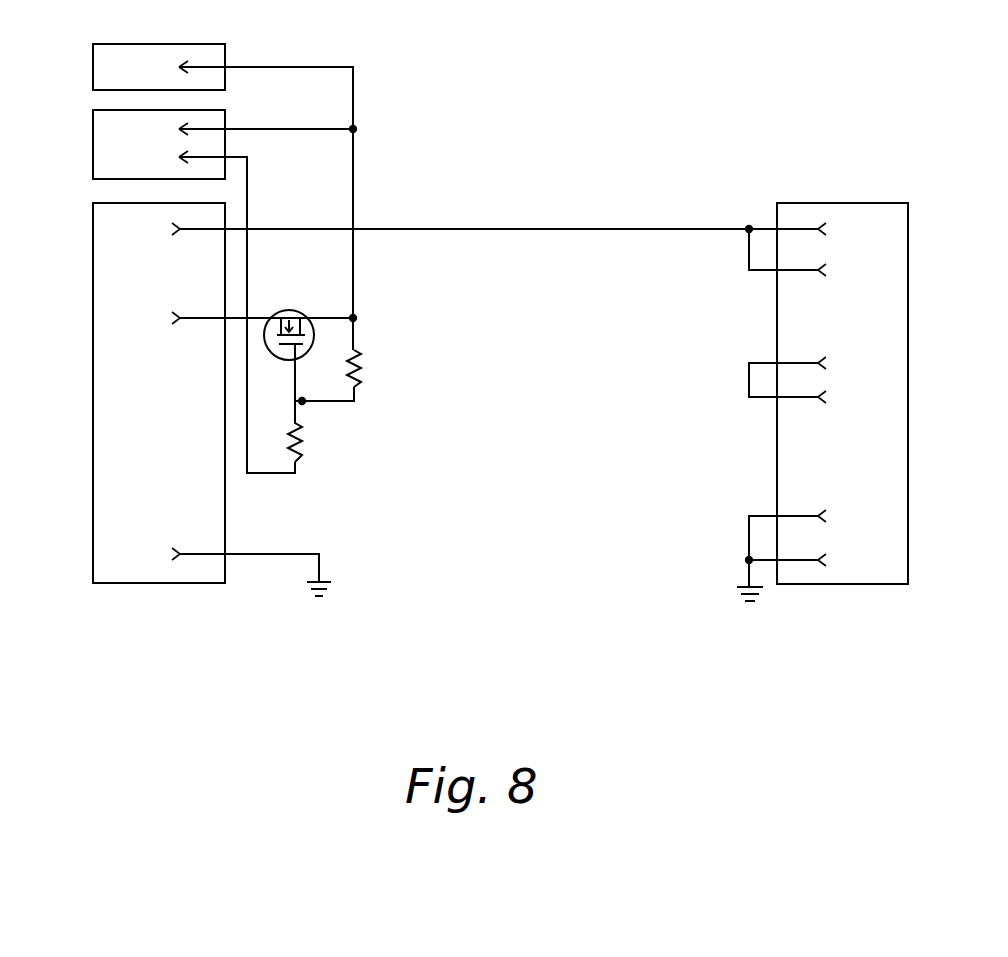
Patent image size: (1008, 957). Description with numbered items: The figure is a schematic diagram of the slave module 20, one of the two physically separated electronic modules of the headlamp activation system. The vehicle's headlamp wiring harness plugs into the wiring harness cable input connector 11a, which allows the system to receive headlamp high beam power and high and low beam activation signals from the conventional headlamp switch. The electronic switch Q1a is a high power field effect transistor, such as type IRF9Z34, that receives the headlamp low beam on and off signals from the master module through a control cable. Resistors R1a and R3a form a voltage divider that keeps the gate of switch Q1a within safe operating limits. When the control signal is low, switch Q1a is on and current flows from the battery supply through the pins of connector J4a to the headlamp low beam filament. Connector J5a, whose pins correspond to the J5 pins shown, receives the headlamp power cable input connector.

The slave module 20 is at (582, 82).
The connector J4a is at (93, 61).
The connector J5a is at (181, 483).
The electronic switch Q1a is at (289, 325).
The resistor R1a is at (372, 378).
The resistor R3a is at (322, 439).
The wiring harness cable input connector 11a is at (888, 336).